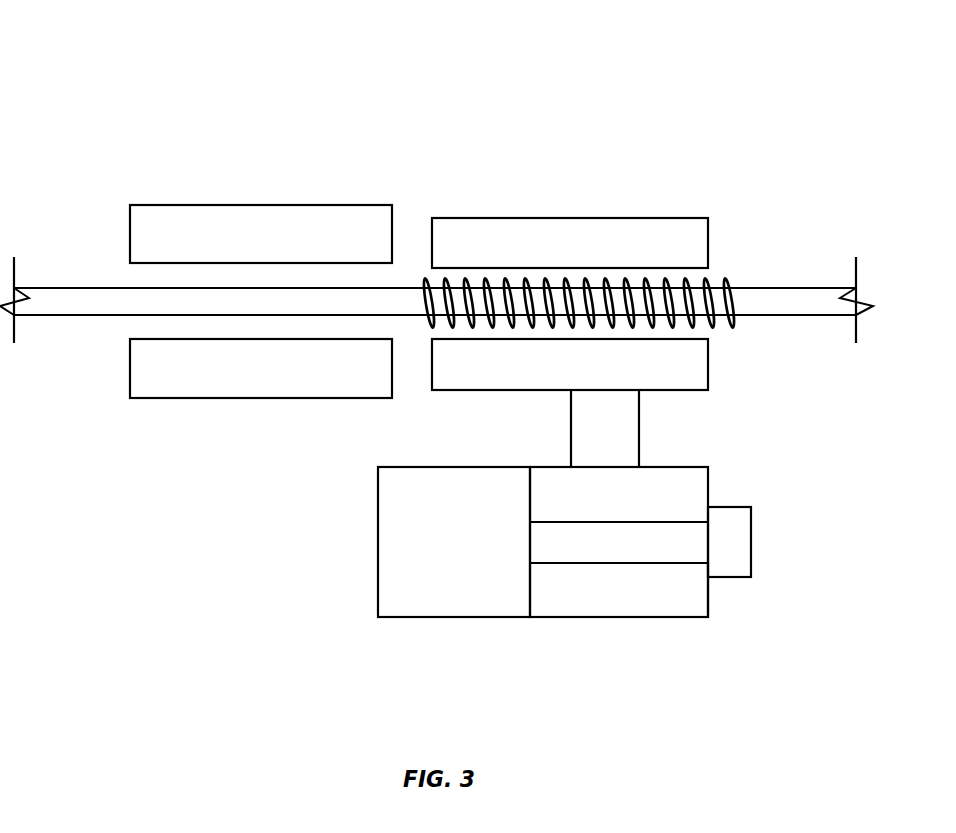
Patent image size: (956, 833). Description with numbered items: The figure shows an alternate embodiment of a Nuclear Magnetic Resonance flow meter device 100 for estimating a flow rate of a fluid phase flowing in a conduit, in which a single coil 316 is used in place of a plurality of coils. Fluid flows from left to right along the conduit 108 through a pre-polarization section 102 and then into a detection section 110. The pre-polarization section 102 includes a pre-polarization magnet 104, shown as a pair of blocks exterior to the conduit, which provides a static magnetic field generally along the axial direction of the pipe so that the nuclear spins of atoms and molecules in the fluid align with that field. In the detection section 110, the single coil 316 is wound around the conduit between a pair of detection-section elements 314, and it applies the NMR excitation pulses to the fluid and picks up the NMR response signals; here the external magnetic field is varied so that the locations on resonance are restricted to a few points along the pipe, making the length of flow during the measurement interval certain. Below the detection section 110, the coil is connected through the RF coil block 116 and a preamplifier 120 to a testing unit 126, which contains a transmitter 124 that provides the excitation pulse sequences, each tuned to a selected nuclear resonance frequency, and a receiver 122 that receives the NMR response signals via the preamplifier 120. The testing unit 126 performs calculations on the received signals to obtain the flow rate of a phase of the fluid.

The NMR flow meter device 100 is at (138, 58).
The pre-polarization section 102 is at (202, 153).
The pre-polarization magnet 104 is at (258, 218).
The elongate member / bar 108 is at (72, 317).
The detection section 110 is at (523, 146).
The RF coil 116 is at (407, 548).
The preamplifier 120 is at (693, 483).
The receiver 122 is at (693, 548).
The transmitter 124 is at (693, 602).
The testing unit 126 is at (363, 645).
The clamp plates 314 is at (660, 218).
The single coil 316 is at (447, 280).